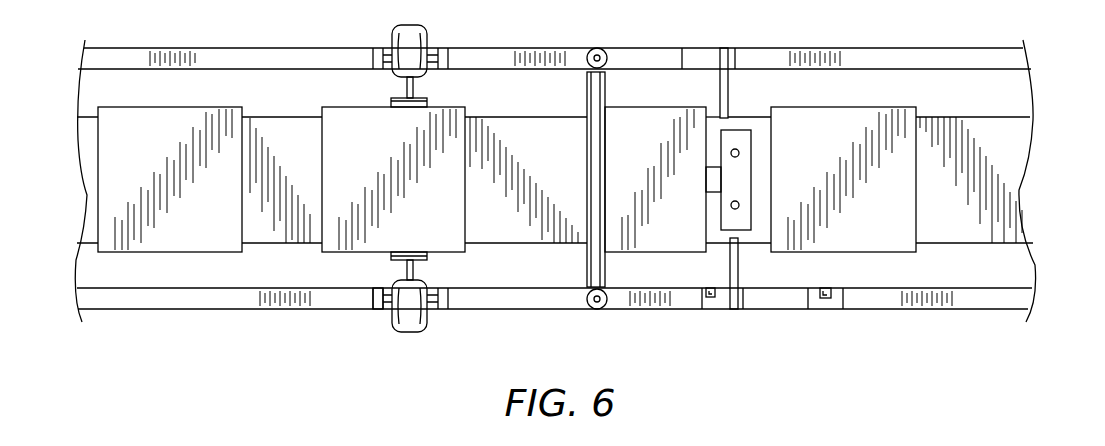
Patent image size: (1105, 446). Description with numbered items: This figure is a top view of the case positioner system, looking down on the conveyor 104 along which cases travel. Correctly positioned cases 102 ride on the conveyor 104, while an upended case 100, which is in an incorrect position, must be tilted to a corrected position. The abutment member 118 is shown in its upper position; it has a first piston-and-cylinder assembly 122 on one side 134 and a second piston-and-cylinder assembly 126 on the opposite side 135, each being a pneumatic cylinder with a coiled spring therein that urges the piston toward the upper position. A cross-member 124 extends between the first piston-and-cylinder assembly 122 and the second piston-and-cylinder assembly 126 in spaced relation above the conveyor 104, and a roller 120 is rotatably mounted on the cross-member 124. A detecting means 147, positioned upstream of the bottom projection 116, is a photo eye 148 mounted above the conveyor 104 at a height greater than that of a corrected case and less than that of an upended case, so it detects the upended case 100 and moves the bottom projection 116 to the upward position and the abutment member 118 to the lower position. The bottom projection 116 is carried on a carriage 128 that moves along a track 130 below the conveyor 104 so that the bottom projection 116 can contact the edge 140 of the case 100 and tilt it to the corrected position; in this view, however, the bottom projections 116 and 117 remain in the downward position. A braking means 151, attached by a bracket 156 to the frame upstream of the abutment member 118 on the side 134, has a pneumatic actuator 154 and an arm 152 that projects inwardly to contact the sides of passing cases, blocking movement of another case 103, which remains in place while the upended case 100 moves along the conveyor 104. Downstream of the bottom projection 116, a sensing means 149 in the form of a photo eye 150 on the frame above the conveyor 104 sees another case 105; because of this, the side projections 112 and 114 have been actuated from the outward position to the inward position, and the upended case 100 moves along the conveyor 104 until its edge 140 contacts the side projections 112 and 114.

The upended case 100 is at (638, 191).
The cases 102 is at (153, 189).
The another case 103 is at (378, 189).
The conveyor 104 is at (292, 242).
The another case 105 is at (829, 189).
The side projection 112 is at (738, 305).
The side projection 114 is at (729, 48).
The bottom projection 116 is at (737, 210).
The bottom projection 117 is at (737, 152).
The abutment member 118 is at (583, 85).
The roller 120 is at (598, 96).
The first piston-and-cylinder assembly 122 is at (597, 311).
The cross-member 124 is at (588, 51).
The second piston-and-cylinder assembly 126 is at (606, 51).
The carriage 128 is at (737, 131).
The track 130 is at (712, 181).
The side 134 is at (248, 306).
The opposite side 135 is at (307, 48).
The edge 140 is at (707, 121).
The detecting means 147 is at (698, 307).
The photo eye 148 is at (710, 298).
The sensing means 149 is at (840, 284).
The photo eye 150 is at (828, 298).
The braking means 151 is at (385, 32).
The arm 152 is at (398, 259).
The pneumatic actuator 154 is at (407, 330).
The bracket 156 is at (378, 303).